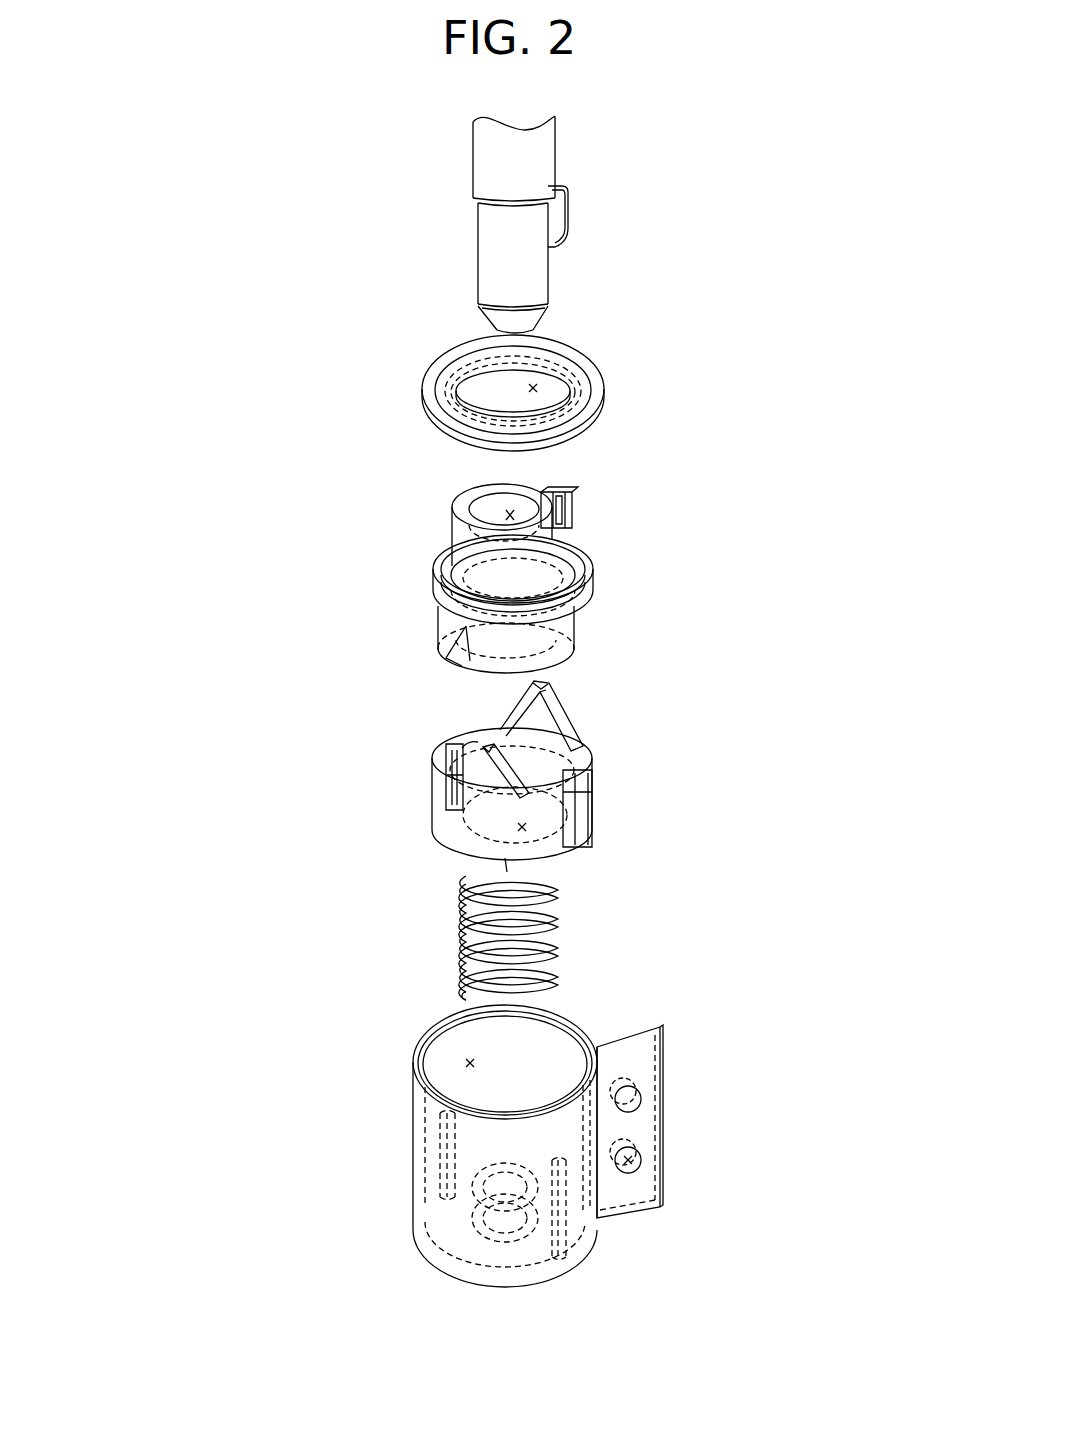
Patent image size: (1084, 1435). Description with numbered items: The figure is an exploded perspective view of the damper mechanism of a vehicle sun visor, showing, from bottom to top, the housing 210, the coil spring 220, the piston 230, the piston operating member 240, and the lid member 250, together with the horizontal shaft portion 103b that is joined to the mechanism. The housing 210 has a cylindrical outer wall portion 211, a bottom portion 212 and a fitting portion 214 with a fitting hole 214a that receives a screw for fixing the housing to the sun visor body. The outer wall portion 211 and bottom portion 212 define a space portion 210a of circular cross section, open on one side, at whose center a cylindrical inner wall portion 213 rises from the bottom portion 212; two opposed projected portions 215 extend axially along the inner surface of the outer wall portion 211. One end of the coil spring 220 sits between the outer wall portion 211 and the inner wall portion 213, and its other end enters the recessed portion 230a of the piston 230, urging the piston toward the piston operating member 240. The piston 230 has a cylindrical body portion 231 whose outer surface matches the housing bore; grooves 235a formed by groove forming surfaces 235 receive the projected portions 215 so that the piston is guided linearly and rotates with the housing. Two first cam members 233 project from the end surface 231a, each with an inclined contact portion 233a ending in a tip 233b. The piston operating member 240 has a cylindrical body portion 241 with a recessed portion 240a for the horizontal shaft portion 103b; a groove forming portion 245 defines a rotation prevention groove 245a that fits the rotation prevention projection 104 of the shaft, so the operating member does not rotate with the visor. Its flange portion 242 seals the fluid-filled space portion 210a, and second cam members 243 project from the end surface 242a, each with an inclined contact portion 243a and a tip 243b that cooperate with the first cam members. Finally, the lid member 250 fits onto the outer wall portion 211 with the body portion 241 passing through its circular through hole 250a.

The horizontal shaft portion 103b is at (523, 153).
The rotation prevention projection 104 is at (563, 219).
The lid member 250 is at (387, 382).
The through hole 250a is at (540, 389).
The piston operating member 240 is at (483, 569).
The recessed portion 240a is at (510, 513).
The cylindrical body portion 241 is at (453, 529).
The flange portion 242 is at (440, 580).
The end surface 242a is at (533, 640).
The second cam member 243 is at (447, 620).
The contact portion 243a is at (466, 660).
The tip 243b is at (452, 651).
The groove forming portion 245 is at (567, 525).
The rotation prevention groove 245a is at (557, 497).
The piston 230 is at (463, 777).
The recessed portion 230a is at (525, 830).
The cylindrical body portion 231 is at (595, 762).
The end surface 231a is at (473, 740).
The first cam member 233 is at (565, 711).
The contact portion 233a is at (570, 730).
The tip 233b is at (548, 684).
The groove forming surface 235 is at (447, 748).
The groove 235a is at (447, 775).
The coil spring 220 is at (590, 918).
The housing 210 is at (508, 1150).
The space portion 210a is at (472, 1064).
The outer wall portion 211 is at (417, 1118).
The bottom portion 212 is at (472, 1254).
The inner wall portion 213 is at (467, 1220).
The fitting portion 214 is at (643, 1063).
The fitting hole 214a is at (630, 1160).
The projected portion 215 is at (440, 1170).